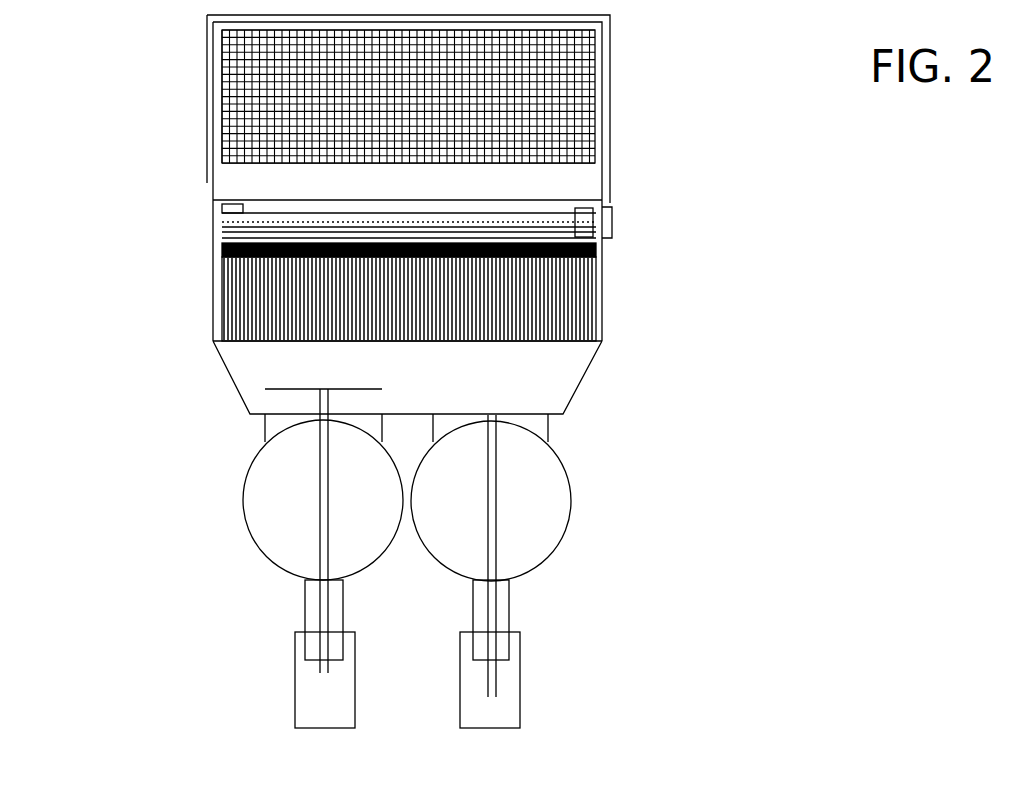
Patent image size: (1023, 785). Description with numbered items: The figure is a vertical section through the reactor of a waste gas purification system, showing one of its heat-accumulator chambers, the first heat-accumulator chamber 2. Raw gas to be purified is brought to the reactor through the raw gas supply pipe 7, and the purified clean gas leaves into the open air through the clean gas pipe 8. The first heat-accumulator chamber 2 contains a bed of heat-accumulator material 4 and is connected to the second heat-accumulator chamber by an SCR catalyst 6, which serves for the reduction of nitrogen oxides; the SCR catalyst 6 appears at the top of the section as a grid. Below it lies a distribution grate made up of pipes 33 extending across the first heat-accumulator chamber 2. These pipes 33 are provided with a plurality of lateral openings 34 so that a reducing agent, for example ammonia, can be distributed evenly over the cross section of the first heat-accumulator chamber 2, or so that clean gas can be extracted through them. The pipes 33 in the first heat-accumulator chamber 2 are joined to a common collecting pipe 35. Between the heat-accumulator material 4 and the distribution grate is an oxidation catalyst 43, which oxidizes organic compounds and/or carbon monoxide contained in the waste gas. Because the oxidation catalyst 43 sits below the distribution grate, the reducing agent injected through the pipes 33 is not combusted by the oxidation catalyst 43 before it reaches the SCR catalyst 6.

The first heat-accumulator chamber 2 is at (175, 336).
The heat-accumulator material 4 is at (603, 305).
The SCR catalyst 6 is at (570, 92).
The raw gas supply pipe 7 is at (253, 545).
The clean gas pipe 8 is at (560, 527).
The pipes 33 is at (523, 218).
The lateral openings 34 is at (215, 233).
The collecting pipe 35 is at (612, 218).
The oxidation catalyst 43 is at (603, 253).